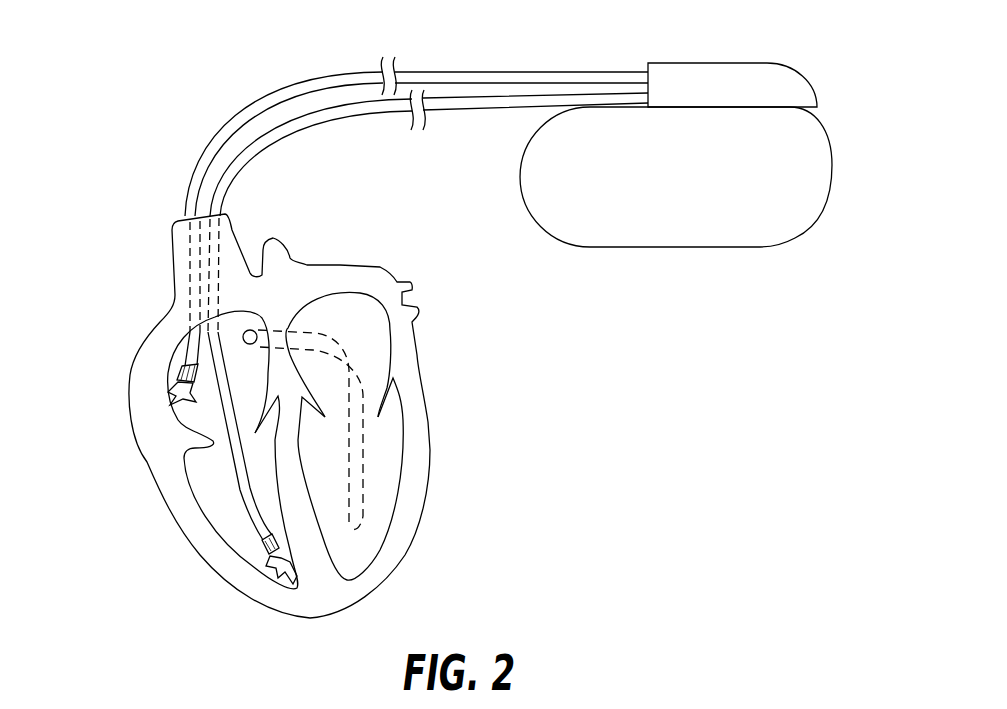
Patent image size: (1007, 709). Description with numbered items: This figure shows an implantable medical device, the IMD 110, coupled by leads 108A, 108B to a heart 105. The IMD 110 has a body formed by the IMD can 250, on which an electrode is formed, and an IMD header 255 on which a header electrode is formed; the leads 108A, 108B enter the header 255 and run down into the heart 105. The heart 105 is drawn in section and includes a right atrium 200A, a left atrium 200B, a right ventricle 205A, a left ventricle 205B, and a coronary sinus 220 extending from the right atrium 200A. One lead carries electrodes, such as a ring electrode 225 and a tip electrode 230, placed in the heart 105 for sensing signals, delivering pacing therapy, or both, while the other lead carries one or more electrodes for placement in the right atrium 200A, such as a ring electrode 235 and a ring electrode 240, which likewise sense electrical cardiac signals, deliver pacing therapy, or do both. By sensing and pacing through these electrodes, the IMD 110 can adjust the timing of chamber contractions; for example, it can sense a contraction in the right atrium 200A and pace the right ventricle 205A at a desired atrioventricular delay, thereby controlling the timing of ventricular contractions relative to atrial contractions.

The IMD 110 is at (768, 31).
The IMD header 255 is at (808, 79).
The IMD can 250 is at (833, 165).
The lead 108A is at (321, 86).
The lead 108B is at (336, 128).
The heart 105 is at (430, 447).
The right atrium 200A is at (180, 432).
The left atrium 200B is at (370, 334).
The right ventricle 205A is at (218, 480).
The left ventricle 205B is at (377, 497).
The coronary sinus 220 is at (243, 334).
The ring electrode 225 is at (178, 372).
The tip electrode 230 is at (170, 403).
The ring electrode 240 is at (262, 551).
The ring electrode 235 is at (290, 574).